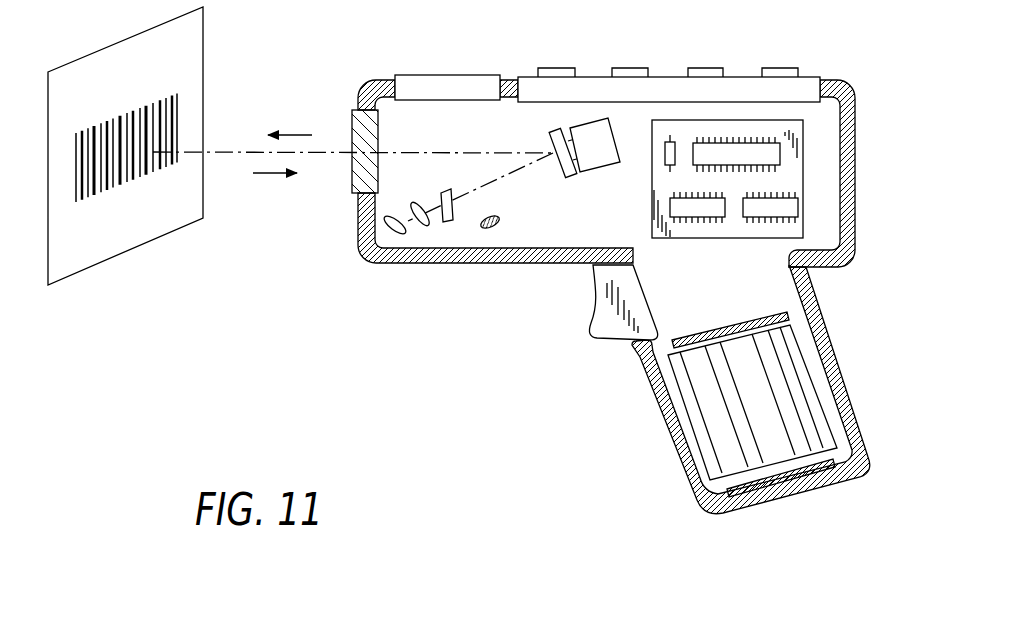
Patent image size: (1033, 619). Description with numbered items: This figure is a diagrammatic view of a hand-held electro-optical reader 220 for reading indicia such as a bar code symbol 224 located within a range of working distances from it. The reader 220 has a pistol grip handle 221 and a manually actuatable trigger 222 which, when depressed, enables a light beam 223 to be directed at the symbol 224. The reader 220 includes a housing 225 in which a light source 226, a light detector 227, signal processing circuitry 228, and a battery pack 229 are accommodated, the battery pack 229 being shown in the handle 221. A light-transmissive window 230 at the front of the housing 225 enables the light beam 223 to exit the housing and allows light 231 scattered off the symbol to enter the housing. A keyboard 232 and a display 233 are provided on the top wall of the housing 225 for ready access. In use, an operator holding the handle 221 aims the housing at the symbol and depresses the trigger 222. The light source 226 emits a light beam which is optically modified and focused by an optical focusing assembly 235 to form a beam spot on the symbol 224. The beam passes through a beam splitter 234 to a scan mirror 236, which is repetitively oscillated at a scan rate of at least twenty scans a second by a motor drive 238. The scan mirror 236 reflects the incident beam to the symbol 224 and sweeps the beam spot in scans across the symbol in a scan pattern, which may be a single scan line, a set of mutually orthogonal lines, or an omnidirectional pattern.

The electro-optical reader 220 is at (482, 344).
The pistol grip handle 221 is at (677, 463).
The trigger 222 is at (600, 335).
The light beam 223 is at (290, 132).
The bar code symbol 224 is at (163, 98).
The housing 225 is at (856, 247).
The light source 226 is at (388, 233).
The light detector 227 is at (509, 222).
The signal processing circuitry 228 is at (783, 162).
The battery pack 229 is at (780, 385).
The light-transmissive window 230 is at (352, 128).
The scattered light 231 is at (273, 176).
The keyboard 232 is at (743, 87).
The display 233 is at (425, 78).
The beam splitter 234 is at (452, 222).
The optical focusing assembly 235 is at (428, 228).
The scan mirror 236 is at (553, 147).
The motor drive 238 is at (598, 172).